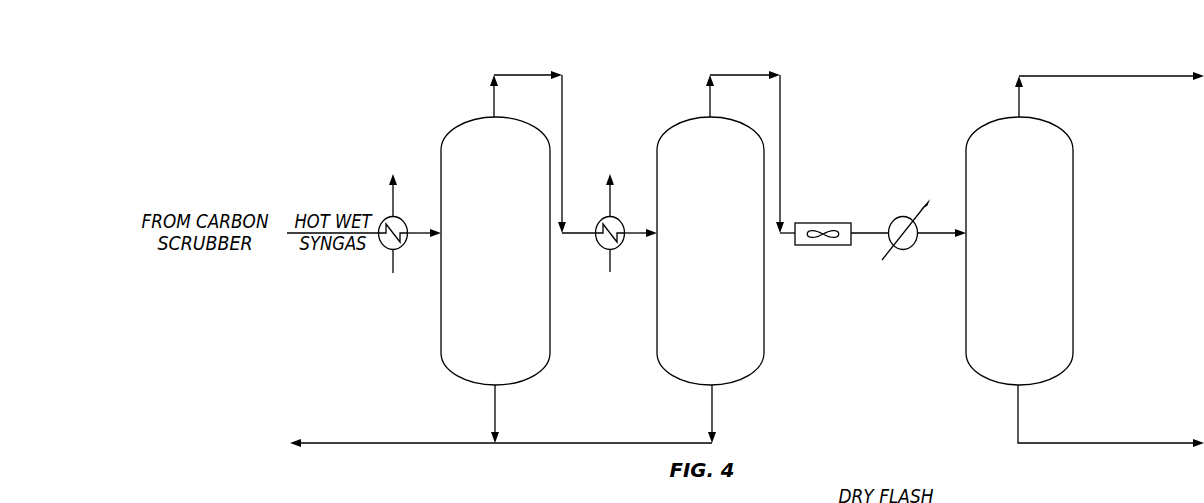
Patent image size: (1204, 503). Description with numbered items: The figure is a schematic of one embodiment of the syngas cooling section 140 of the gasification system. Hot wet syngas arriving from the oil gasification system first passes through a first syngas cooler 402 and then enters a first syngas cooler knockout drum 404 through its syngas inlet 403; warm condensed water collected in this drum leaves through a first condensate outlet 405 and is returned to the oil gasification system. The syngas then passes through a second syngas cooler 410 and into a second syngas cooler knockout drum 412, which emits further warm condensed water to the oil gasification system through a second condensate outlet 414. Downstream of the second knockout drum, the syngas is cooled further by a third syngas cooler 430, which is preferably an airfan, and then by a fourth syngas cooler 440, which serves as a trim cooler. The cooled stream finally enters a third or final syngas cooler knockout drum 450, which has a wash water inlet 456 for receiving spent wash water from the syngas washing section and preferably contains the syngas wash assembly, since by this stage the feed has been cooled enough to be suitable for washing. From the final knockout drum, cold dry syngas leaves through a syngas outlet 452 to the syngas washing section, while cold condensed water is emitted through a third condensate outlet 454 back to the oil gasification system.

The syngas cooling section 140 is at (287, 156).
The first syngas cooler 402 is at (386, 217).
The syngas inlet 403 is at (434, 228).
The first syngas cooler knockout drum 404 is at (470, 119).
The first condensate outlet 405 is at (494, 393).
The second syngas cooler 410 is at (603, 251).
The second syngas cooler knockout drum 412 is at (684, 119).
The second condensate outlet 414 is at (711, 393).
The third syngas cooler 430 is at (836, 222).
The fourth syngas cooler 440 is at (895, 220).
The final syngas cooler knockout drum 450 is at (1075, 231).
The syngas outlet 452 is at (1021, 112).
The third condensate outlet 454 is at (1018, 393).
The wash water inlet 456 is at (961, 230).